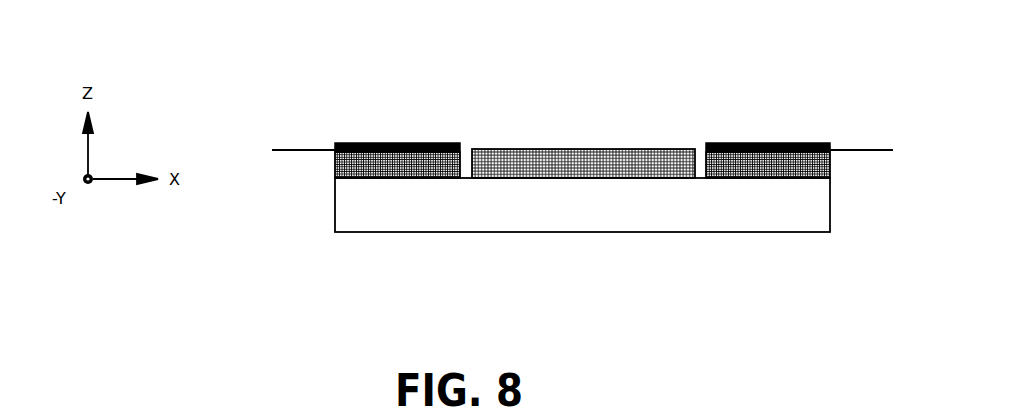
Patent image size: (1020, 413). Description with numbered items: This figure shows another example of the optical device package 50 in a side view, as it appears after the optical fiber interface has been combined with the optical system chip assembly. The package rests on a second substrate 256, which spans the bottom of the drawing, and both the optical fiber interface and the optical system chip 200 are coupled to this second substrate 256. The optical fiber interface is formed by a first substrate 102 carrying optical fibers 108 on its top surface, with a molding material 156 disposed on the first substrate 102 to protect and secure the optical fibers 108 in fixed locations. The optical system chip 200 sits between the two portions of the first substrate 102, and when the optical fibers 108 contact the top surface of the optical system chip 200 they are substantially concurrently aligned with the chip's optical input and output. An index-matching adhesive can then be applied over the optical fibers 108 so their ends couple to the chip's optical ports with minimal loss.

The optical device package 50 is at (326, 64).
The optical fibers 108 is at (310, 150).
The molding material 156 is at (415, 143).
The first substrate 102 is at (335, 168).
The optical system chip 200 is at (601, 172).
The second substrate 256 is at (601, 218).